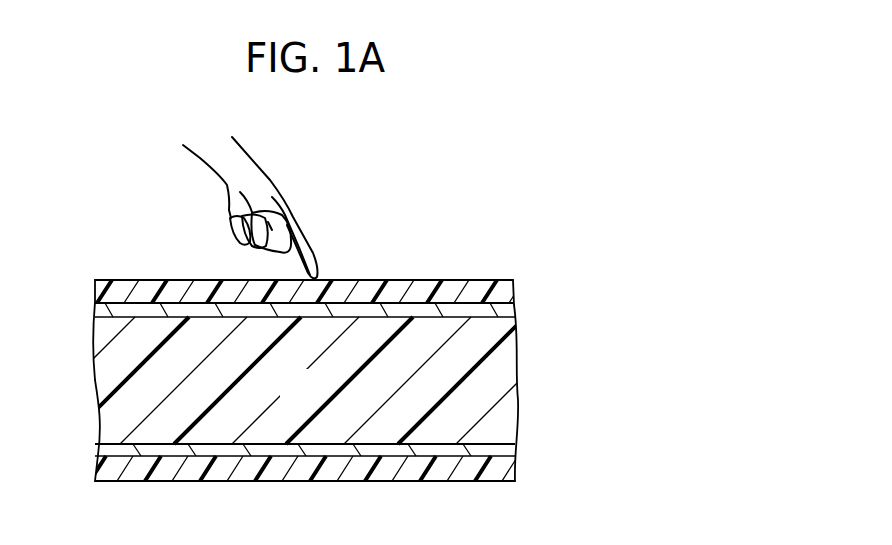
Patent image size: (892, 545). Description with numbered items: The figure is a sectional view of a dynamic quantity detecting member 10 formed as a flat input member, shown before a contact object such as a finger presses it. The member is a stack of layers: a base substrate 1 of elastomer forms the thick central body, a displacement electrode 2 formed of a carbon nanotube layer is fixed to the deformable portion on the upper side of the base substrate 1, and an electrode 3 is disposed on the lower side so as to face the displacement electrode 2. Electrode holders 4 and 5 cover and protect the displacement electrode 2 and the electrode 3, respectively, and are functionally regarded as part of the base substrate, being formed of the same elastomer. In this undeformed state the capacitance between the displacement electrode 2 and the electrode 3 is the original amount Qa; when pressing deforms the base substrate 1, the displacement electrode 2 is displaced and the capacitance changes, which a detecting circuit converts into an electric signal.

The dynamic quantity detecting member 10 is at (501, 267).
The electrode holder 4 is at (515, 291).
The displacement electrode 2 is at (515, 313).
The base substrate 1 is at (500, 377).
The electrode 3 is at (500, 450).
The electrode holder 5 is at (505, 470).